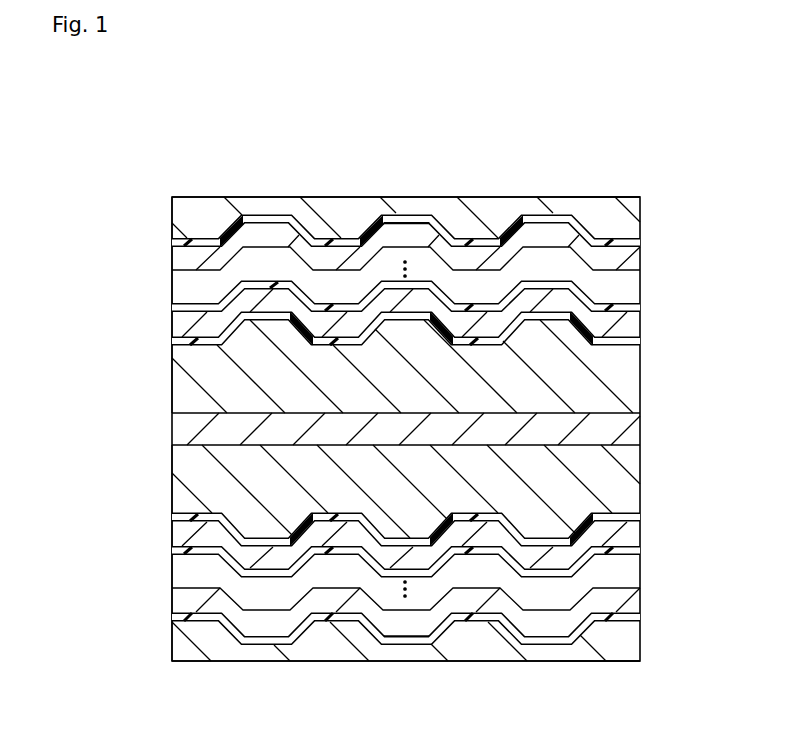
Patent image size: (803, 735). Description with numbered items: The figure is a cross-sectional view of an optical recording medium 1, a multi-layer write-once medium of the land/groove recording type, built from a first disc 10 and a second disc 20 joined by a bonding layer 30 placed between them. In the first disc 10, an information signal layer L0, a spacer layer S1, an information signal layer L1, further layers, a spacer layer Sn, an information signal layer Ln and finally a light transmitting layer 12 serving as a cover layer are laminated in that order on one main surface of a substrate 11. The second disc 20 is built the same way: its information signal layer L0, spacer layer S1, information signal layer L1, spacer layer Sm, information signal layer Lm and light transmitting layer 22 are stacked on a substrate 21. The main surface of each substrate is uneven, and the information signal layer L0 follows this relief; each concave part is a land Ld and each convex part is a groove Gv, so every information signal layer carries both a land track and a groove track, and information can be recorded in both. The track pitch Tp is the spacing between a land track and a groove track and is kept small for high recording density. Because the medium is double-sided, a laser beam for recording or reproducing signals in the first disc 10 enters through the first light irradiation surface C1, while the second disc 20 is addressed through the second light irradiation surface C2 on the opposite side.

The optical recording medium 1 is at (215, 147).
The first disc 10 is at (162, 197).
The second disc 20 is at (162, 445).
The substrate 11 is at (630, 385).
The light transmitting layer 12 is at (642, 223).
The substrate 21 is at (630, 475).
The light transmitting layer 22 is at (630, 633).
The bonding layer 30 is at (642, 430).
The information signal layer Ln is at (642, 243).
The spacer layer Sn is at (642, 260).
The information signal layer L1 is at (642, 306).
The spacer layer S1 is at (642, 325).
The information signal layer L0 is at (642, 343).
The information signal layer Lm is at (630, 617).
The spacer layer Sm is at (630, 600).
The land Ld is at (342, 246).
The groove Gv is at (413, 222).
The track pitch Tp is at (548, 173).
The first light irradiation surface C1 is at (600, 196).
The second light irradiation surface C2 is at (600, 663).